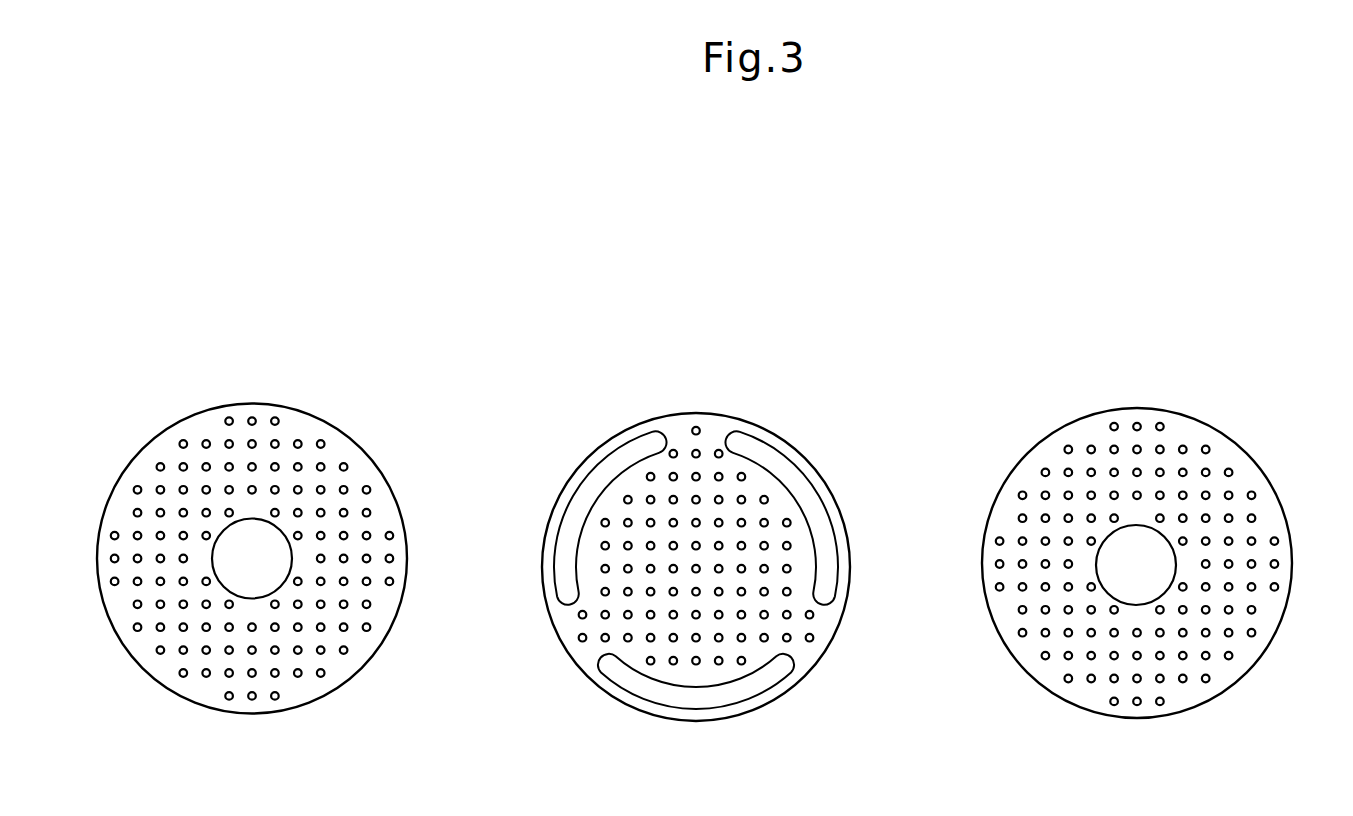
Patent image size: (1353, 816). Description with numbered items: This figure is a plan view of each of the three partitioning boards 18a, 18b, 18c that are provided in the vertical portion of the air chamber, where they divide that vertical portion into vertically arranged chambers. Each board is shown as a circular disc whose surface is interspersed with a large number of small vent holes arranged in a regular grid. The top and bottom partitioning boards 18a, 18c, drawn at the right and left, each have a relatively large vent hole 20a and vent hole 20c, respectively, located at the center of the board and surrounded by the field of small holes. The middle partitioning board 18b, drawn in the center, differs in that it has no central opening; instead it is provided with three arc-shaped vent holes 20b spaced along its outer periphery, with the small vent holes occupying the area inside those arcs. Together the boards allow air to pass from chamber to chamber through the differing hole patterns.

The top partitioning board 18a is at (1132, 408).
The middle partitioning board 18b is at (712, 413).
The bottom partitioning board 18c is at (246, 403).
The vent hole 20a is at (1137, 526).
The arc-shaped vent holes 20b is at (604, 458).
The vent hole 20c is at (252, 519).